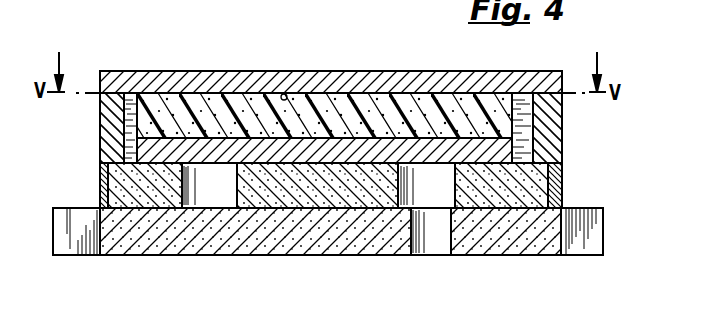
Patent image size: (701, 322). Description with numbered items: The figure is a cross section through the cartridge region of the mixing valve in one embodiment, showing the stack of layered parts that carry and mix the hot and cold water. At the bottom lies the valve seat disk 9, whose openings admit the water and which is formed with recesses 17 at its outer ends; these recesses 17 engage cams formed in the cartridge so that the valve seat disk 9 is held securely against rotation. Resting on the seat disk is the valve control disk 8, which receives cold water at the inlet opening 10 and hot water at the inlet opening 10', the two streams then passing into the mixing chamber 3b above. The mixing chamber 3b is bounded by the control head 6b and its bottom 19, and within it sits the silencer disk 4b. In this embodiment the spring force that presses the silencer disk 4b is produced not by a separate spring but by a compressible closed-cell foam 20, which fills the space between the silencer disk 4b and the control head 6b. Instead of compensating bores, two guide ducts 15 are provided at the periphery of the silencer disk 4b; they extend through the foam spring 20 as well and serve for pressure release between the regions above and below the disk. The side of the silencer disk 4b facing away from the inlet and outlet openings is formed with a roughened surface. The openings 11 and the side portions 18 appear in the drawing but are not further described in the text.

The mixing chamber 3b is at (393, 96).
The silencer disk 4b is at (324, 151).
The control head 6b is at (348, 82).
The valve control disk 8 is at (328, 185).
The valve seat disk 9 is at (330, 231).
The inlet opening 10 is at (221, 244).
The inlet opening 10' is at (276, 249).
The opening 11 is at (430, 203).
The guide ducts 15 is at (128, 126).
The recesses 17 is at (93, 256).
The side wall 18 is at (112, 185).
The bottom 19 is at (284, 94).
The closed-cell foam 20 is at (324, 115).